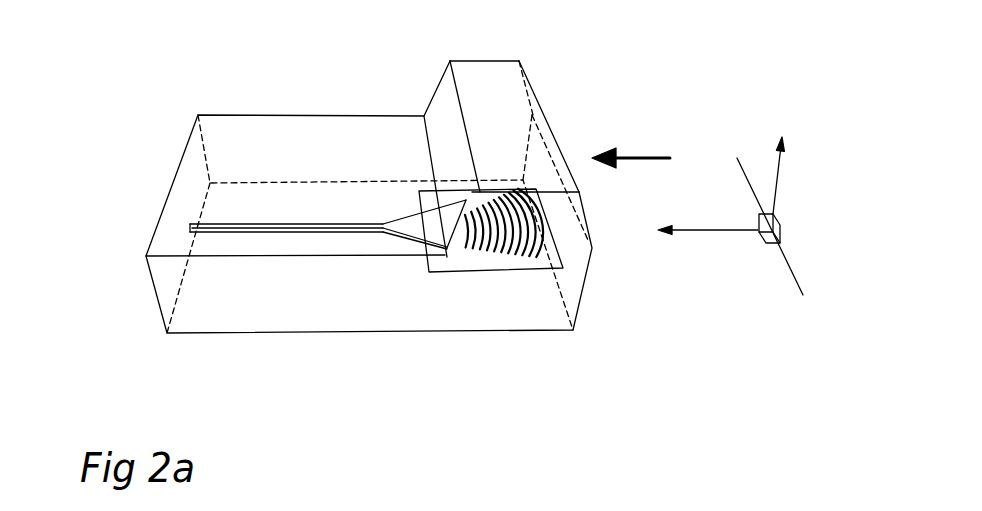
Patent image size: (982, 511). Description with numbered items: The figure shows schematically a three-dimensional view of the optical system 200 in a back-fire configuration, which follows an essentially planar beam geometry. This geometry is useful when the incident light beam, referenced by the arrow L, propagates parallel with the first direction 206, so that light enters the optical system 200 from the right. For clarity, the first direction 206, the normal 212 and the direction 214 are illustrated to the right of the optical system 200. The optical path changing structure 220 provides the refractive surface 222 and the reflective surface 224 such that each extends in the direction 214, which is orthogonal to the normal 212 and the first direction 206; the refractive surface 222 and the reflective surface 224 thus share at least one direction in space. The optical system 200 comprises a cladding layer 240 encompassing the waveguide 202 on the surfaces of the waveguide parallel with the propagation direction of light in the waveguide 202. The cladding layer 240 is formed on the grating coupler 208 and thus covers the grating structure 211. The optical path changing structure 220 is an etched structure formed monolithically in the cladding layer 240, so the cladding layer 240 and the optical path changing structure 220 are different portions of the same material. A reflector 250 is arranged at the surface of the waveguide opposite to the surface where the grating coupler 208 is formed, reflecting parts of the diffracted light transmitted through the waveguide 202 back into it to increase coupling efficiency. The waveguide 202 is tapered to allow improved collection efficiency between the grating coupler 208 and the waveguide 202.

The optical system 200 is at (135, 108).
The waveguide 202 is at (306, 224).
The first direction 206 is at (725, 230).
The grating coupler 208 is at (465, 192).
The grating structure 211 is at (482, 223).
The normal 212 is at (791, 155).
The direction 214 is at (744, 166).
The optical path changing structure 220 is at (480, 40).
The refractive surface 222 is at (540, 108).
The reflective surface 224 is at (442, 98).
The cladding layer 240 is at (383, 320).
The reflector 250 is at (442, 272).